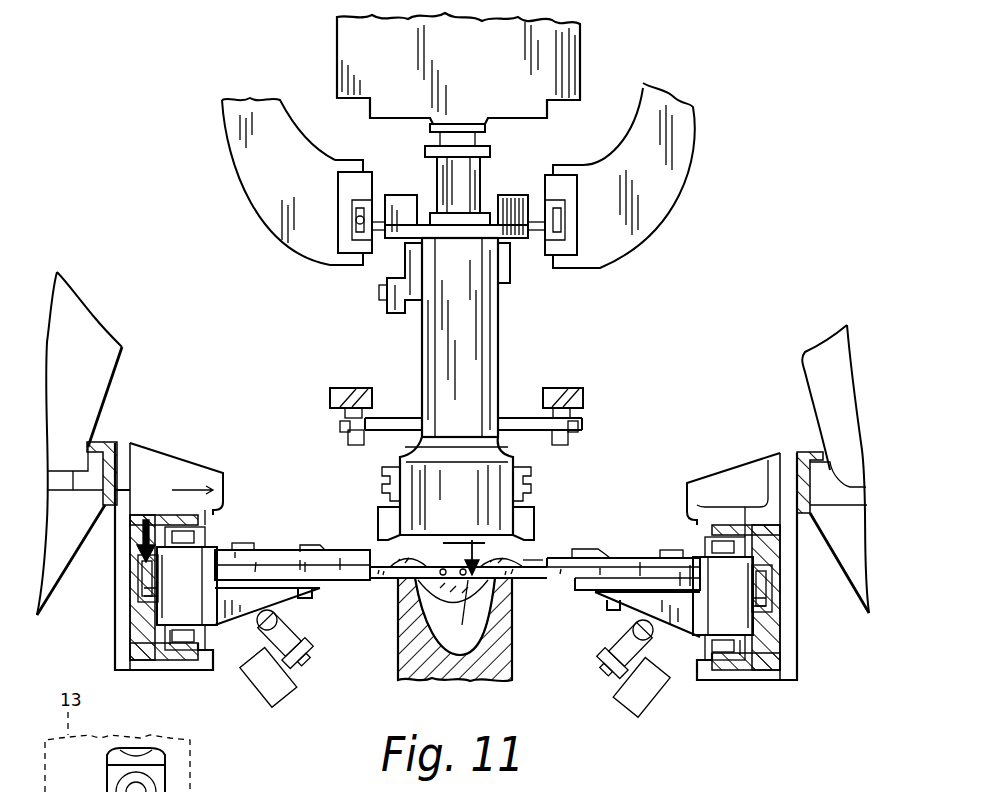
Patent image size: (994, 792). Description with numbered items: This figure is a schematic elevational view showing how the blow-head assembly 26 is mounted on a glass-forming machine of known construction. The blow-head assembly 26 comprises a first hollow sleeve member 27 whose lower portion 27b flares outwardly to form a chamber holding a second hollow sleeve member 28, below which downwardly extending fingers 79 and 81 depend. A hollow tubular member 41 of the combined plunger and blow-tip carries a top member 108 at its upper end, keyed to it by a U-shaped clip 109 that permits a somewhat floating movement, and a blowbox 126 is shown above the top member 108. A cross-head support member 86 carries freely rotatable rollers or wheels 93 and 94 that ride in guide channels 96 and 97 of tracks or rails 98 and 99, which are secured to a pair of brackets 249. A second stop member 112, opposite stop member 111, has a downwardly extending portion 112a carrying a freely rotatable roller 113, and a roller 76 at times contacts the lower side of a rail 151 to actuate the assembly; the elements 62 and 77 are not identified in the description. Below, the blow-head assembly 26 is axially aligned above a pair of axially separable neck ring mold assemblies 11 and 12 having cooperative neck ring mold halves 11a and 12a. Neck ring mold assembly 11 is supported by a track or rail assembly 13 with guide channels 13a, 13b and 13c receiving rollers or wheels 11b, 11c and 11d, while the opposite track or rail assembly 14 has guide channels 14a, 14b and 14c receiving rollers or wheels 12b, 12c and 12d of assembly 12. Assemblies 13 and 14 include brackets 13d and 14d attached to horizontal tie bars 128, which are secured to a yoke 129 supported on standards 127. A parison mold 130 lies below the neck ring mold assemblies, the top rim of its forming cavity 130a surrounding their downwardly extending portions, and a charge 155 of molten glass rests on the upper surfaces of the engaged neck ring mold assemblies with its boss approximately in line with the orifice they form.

The blowbox 126 is at (472, 57).
The top member 108 is at (487, 129).
The U-shaped clip 109 is at (460, 191).
The hollow tubular member 41 is at (446, 195).
The cross-head support member 86 is at (515, 240).
The roller or wheel 93 is at (348, 196).
The guide channel 96 is at (356, 221).
The track or rail 98 is at (372, 185).
The bracket 249 is at (248, 110).
The track or rail 99 is at (545, 187).
The guide channel 97 is at (560, 196).
The roller or wheel 94 is at (558, 228).
The blow-head assembly 26 is at (500, 327).
The first hollow sleeve member 27 is at (490, 362).
The lower portion of sleeve member 27b is at (500, 463).
The second hollow sleeve member 28 is at (522, 518).
The finger 79 is at (378, 530).
The finger 81 is at (534, 536).
The second stop member 112 is at (410, 266).
The roller 113 is at (384, 302).
The downwardly extending portion 112a is at (404, 312).
The stop member 111 is at (500, 268).
The horizontal bar 62 is at (398, 420).
The rail 151 is at (347, 390).
The roller 76 is at (347, 438).
The right nut 77 is at (572, 438).
The parison mold 130 is at (500, 675).
The forming cavity 130a is at (446, 652).
The neck ring mold half 11a is at (453, 600).
The neck ring mold half 12a is at (438, 660).
The neck ring mold assembly 11 is at (376, 580).
The neck ring mold assembly 12 is at (533, 580).
The charge 155 is at (527, 560).
The track or rail assembly 13 is at (132, 640).
The bracket 13d is at (170, 470).
The roller or wheel 11b is at (222, 500).
The guide channel 13a is at (186, 534).
The guide channel 13b is at (138, 578).
The roller or wheel 11c is at (144, 600).
The guide channel 13c is at (183, 650).
The roller or wheel 11d is at (172, 648).
The horizontal tie bar 128 is at (105, 445).
The yoke 129 is at (103, 362).
The standard 127 is at (845, 572).
The track or rail assembly 14 is at (781, 643).
The bracket 14d is at (770, 462).
The roller or wheel 12b is at (745, 507).
The guide channel 14a is at (718, 544).
The guide channel 14b is at (775, 588).
The roller or wheel 12c is at (770, 610).
The guide channel 14c is at (728, 660).
The roller or wheel 12d is at (762, 662).